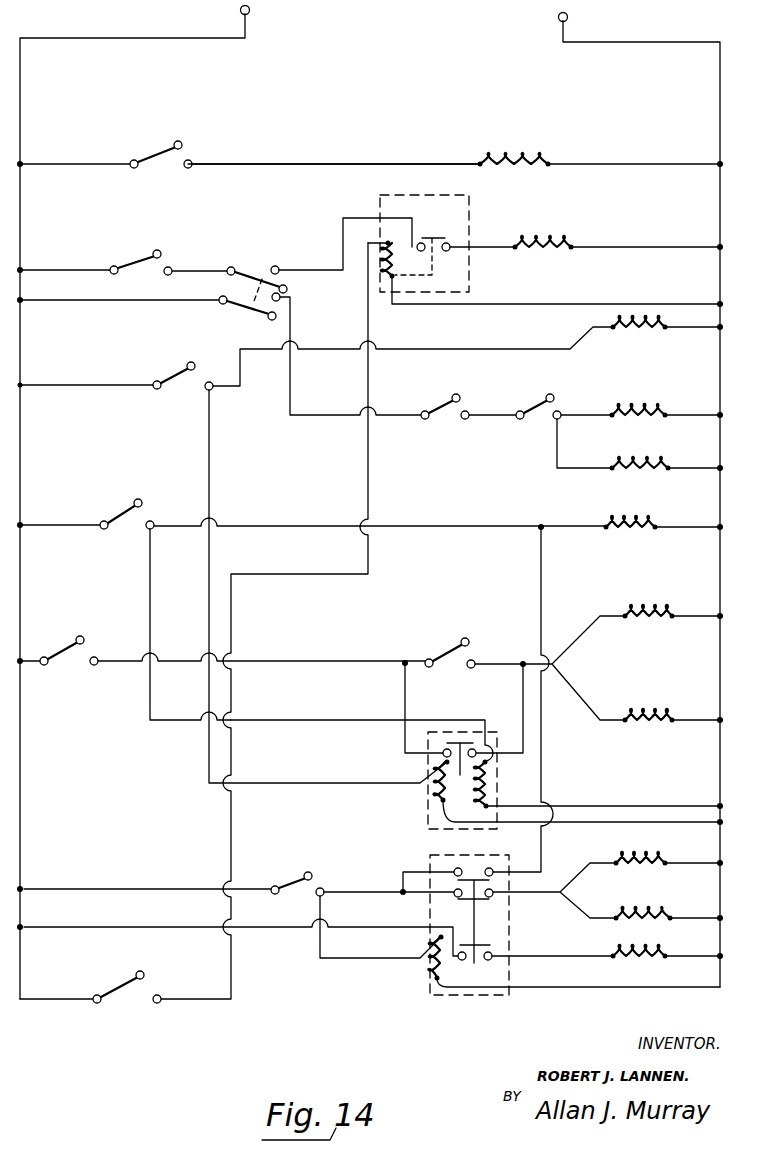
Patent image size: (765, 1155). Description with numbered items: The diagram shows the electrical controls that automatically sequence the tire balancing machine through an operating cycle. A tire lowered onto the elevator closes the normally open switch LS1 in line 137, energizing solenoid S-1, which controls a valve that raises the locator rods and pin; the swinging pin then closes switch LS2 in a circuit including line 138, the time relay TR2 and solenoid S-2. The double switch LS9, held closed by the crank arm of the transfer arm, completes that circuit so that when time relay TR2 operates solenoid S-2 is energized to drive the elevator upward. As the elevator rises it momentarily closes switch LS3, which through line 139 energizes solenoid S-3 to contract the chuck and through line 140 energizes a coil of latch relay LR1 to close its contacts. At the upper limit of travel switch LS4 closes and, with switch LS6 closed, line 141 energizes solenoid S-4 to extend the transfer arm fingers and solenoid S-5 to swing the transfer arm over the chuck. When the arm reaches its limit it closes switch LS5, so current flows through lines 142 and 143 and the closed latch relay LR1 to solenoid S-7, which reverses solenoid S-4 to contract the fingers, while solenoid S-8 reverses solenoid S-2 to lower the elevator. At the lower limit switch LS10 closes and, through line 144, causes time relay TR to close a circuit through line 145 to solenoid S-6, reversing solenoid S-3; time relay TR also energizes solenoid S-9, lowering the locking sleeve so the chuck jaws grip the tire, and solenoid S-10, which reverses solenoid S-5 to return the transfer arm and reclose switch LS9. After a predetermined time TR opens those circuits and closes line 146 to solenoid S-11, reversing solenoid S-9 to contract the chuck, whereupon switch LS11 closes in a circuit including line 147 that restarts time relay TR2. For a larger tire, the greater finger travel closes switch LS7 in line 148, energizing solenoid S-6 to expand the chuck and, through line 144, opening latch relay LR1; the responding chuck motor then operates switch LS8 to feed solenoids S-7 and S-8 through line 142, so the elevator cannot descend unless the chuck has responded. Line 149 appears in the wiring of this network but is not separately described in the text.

The line 137 is at (322, 165).
The line 138 is at (343, 232).
The line 139 is at (433, 350).
The line 140 is at (212, 450).
The line 141 is at (293, 398).
The line 142 is at (270, 664).
The line 143 is at (404, 704).
The line 144 is at (353, 890).
The line 145 is at (544, 700).
The line 146 is at (355, 928).
The line 147 is at (233, 976).
The line 148 is at (262, 529).
The conductor from limit switch LS7 to latching relay circuit 149 is at (146, 704).
The normally open switch LS1 is at (166, 149).
The normally open switch LS2 is at (152, 258).
The switch LS3 is at (180, 370).
The switch LS4 is at (444, 405).
The switch LS5 is at (74, 645).
The switch LS6 is at (539, 405).
The switch LS7 is at (128, 508).
The switch LS8 is at (456, 647).
The normally open double switch LS9 is at (262, 271).
The switch LS10 is at (306, 876).
The switch LS11 is at (130, 983).
The solenoid S-1 is at (540, 160).
The solenoid S-2 is at (563, 245).
The solenoid S-3 is at (616, 330).
The solenoid S-4 is at (620, 410).
The solenoid S-5 is at (616, 471).
The solenoid S-6 is at (608, 530).
The solenoid S-7 is at (630, 612).
The solenoid S-8 is at (630, 723).
The solenoid S-9 is at (622, 858).
The solenoid S-10 is at (624, 913).
The solenoid S-11 is at (620, 951).
The time relay TR2 is at (470, 216).
The latch relay LR1 is at (428, 800).
The time relay TR is at (430, 984).